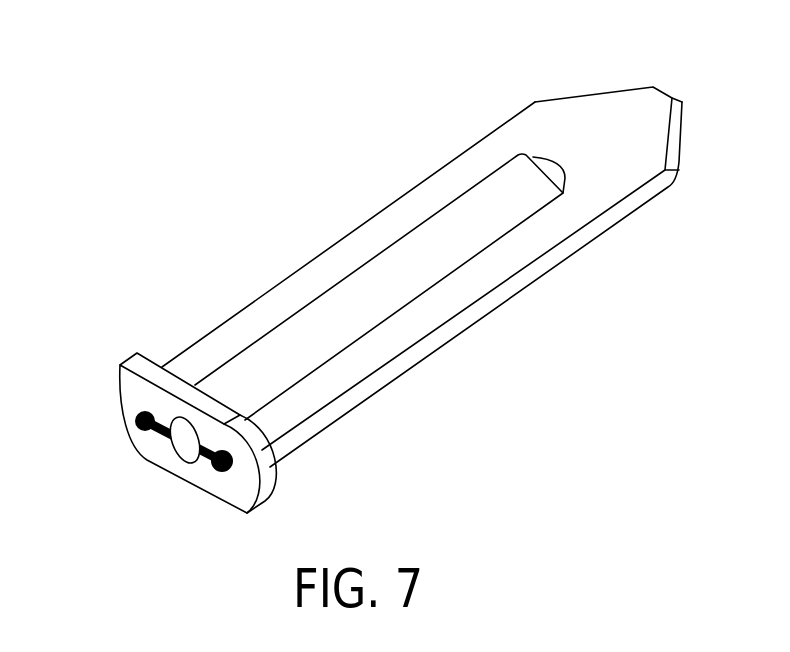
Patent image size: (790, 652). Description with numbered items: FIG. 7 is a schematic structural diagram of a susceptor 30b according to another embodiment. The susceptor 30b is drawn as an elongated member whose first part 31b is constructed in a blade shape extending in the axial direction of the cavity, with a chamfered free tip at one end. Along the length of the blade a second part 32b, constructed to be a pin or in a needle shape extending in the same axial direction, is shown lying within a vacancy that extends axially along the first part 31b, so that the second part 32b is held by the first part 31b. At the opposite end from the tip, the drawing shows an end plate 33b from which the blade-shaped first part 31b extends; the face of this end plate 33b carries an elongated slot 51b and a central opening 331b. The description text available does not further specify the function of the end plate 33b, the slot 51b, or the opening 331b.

The susceptor 30b is at (372, 288).
The first part 31b is at (595, 202).
The second part 32b is at (422, 281).
The end plate 33b is at (207, 452).
The slot 51b is at (130, 423).
The through hole 331b is at (183, 452).